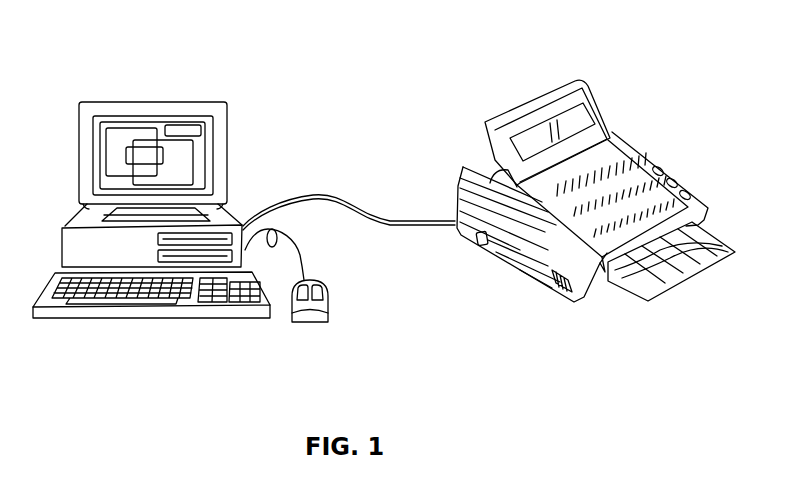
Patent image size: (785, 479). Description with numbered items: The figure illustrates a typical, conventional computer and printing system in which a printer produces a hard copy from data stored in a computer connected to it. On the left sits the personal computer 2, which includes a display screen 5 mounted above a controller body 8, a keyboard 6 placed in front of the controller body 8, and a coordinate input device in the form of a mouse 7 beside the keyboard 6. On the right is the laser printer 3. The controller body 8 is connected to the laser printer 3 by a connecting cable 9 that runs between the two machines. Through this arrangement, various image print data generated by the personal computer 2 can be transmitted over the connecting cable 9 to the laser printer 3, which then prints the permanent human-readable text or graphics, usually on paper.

The personal computer 2 is at (111, 90).
The laser printer 3 is at (660, 78).
The display screen 5 is at (213, 153).
The keyboard 6 is at (224, 317).
The coordinate input device (mouse) 7 is at (323, 292).
The controller body 8 is at (72, 213).
The connecting cable 9 is at (362, 206).